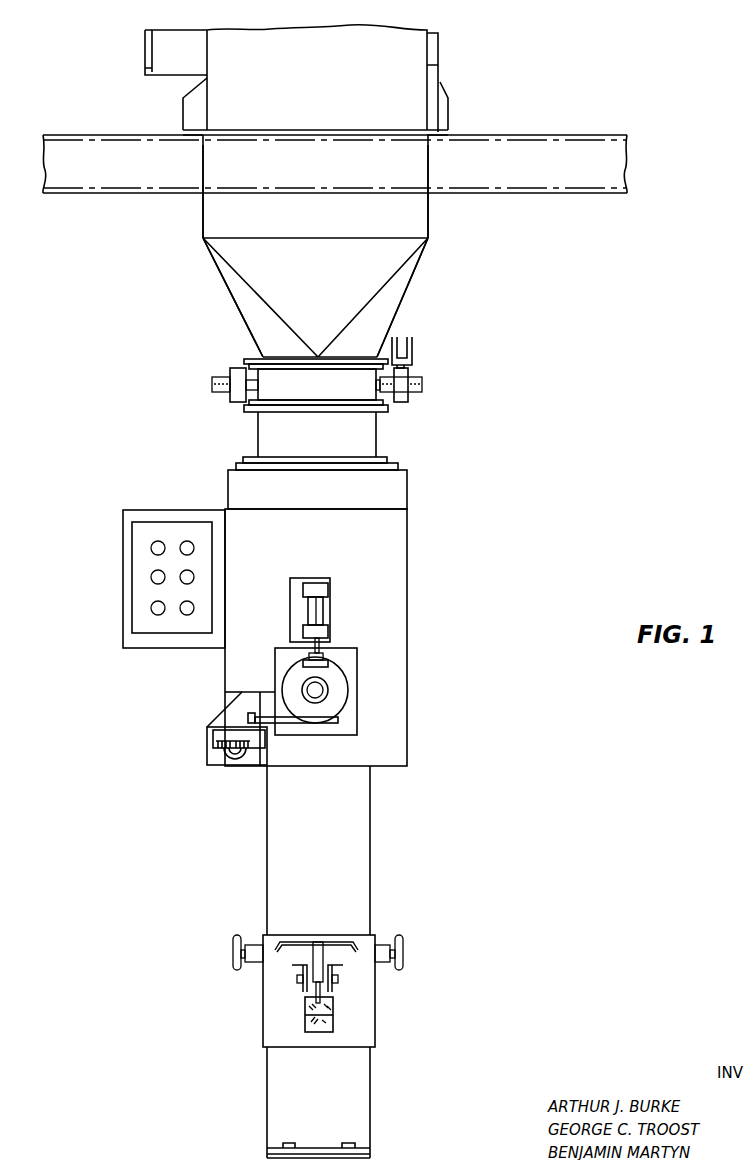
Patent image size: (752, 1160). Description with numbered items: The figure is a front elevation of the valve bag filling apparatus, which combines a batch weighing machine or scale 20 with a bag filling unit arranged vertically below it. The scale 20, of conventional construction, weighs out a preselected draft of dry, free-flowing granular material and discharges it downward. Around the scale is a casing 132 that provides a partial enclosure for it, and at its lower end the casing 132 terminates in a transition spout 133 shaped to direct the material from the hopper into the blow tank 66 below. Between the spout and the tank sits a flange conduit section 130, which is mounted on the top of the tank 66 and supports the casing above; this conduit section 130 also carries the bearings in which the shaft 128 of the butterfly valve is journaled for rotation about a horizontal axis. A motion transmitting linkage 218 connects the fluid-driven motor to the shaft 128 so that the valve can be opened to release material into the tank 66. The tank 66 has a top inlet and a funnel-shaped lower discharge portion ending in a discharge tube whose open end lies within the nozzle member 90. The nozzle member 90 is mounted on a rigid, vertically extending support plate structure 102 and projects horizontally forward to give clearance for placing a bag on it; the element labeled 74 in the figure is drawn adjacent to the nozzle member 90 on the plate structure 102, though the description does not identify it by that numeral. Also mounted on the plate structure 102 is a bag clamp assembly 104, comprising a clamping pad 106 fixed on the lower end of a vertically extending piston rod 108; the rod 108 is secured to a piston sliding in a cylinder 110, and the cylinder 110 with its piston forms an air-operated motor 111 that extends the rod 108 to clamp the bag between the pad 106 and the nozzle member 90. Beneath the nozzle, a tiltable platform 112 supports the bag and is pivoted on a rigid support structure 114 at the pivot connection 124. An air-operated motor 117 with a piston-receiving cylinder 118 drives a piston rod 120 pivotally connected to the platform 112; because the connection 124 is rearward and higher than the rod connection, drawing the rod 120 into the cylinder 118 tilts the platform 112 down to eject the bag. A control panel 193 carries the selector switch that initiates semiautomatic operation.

The batch weighing machine or scale 20 is at (207, 280).
The casing 132 is at (203, 218).
The transition spout 133 is at (413, 285).
The flange conduit section 130 is at (333, 395).
The shaft 128 is at (422, 384).
The motion transmitting linkage 218 is at (412, 349).
The blow tank 66 is at (409, 481).
The support plate structure 102 is at (403, 548).
The control panel 193 is at (150, 510).
The air-operated motor 111 is at (326, 581).
The cylinder 110 is at (308, 611).
The bag clamp assembly 104 is at (332, 614).
The piston rod 108 is at (331, 647).
The clamping pad 106 is at (332, 663).
The rotary disc 74 is at (337, 682).
The nozzle member 90 is at (325, 699).
The air-operated motor 117 is at (348, 1025).
The support structure 114 is at (337, 985).
The tiltable platform 112 is at (353, 951).
The pivot connection 124 is at (300, 975).
The piston rod 120 is at (305, 998).
The piston-receiving cylinder 118 is at (335, 1010).